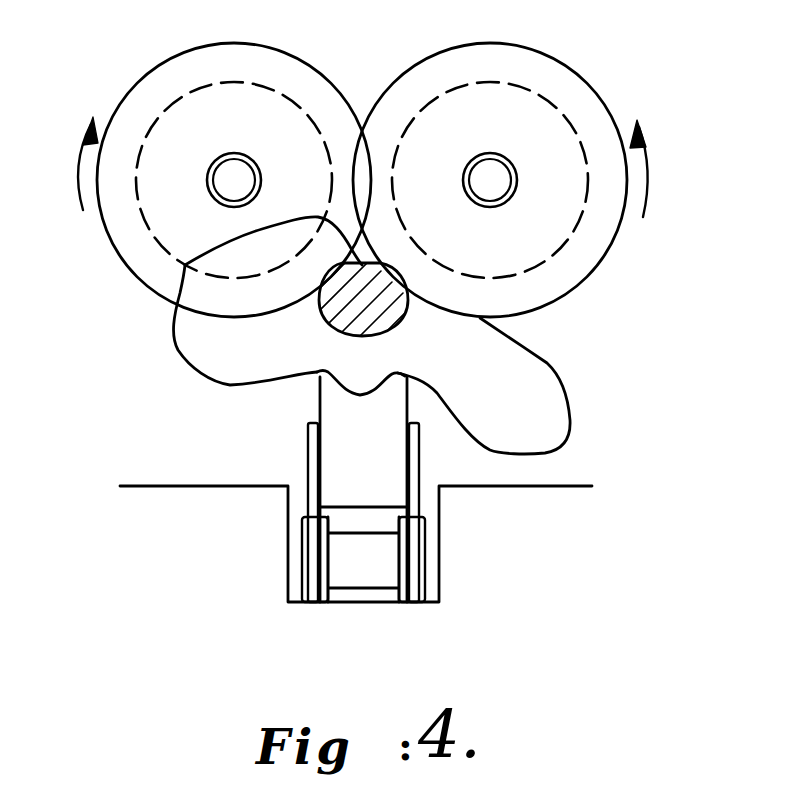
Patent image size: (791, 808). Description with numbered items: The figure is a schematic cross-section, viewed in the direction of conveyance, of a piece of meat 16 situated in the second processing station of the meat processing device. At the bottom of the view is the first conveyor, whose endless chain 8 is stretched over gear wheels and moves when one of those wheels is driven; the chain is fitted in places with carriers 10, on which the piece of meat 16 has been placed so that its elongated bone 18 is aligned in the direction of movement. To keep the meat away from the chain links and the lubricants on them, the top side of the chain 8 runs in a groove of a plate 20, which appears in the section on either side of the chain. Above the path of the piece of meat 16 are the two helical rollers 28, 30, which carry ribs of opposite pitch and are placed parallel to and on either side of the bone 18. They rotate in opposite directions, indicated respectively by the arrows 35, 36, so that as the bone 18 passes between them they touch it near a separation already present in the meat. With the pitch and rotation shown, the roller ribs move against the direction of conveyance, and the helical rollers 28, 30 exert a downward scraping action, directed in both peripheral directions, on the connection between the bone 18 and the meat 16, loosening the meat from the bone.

The endless chain 8 is at (358, 570).
The carriers 10 is at (380, 447).
The piece of meat 16 is at (550, 402).
The elongated bone 18 is at (337, 317).
The plate 20 is at (182, 510).
The first helical roller 28 is at (577, 266).
The first helical roller 30 is at (199, 103).
The arrow 35 is at (647, 175).
The arrow 36 is at (80, 175).